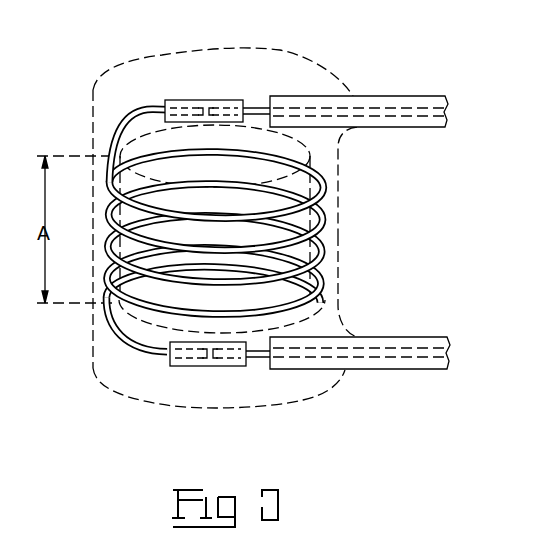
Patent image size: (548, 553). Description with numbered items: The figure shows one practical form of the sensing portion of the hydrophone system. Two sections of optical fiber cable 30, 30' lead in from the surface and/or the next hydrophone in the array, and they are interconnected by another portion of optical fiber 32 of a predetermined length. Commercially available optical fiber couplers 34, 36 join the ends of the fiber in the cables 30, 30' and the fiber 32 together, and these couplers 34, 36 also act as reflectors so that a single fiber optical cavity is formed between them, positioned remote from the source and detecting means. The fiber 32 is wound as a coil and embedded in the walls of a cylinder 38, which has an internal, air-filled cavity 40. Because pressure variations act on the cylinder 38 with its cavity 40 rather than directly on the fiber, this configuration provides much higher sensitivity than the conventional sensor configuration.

The optical fiber cable 30 is at (345, 94).
The optical fiber cable 30' is at (348, 336).
The optical fiber 32 is at (320, 182).
The optical fiber coupler 34 is at (222, 100).
The optical fiber coupler 36 is at (223, 367).
The cylinder 38 is at (340, 223).
The air-filled cavity 40 is at (340, 304).